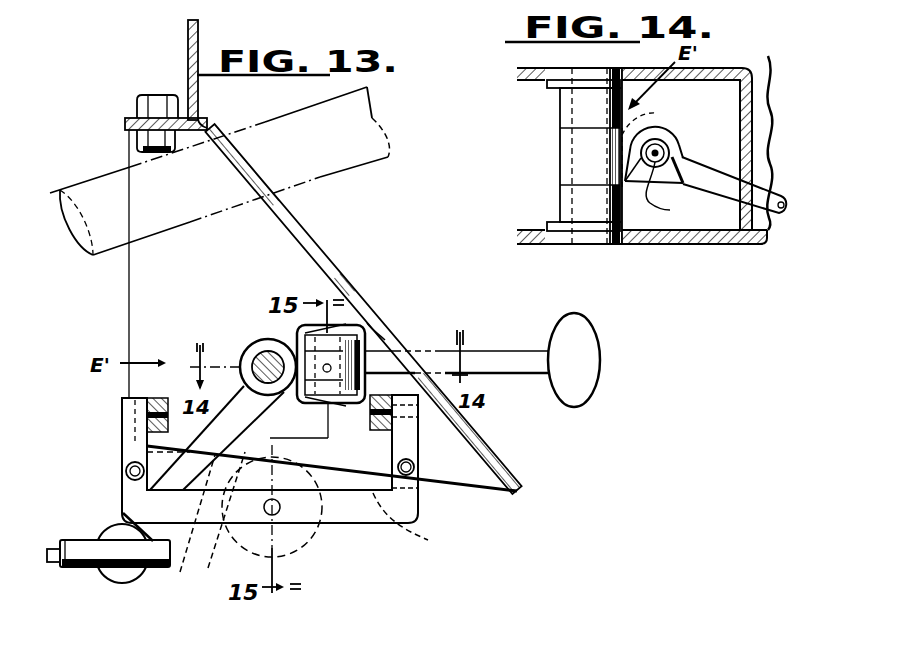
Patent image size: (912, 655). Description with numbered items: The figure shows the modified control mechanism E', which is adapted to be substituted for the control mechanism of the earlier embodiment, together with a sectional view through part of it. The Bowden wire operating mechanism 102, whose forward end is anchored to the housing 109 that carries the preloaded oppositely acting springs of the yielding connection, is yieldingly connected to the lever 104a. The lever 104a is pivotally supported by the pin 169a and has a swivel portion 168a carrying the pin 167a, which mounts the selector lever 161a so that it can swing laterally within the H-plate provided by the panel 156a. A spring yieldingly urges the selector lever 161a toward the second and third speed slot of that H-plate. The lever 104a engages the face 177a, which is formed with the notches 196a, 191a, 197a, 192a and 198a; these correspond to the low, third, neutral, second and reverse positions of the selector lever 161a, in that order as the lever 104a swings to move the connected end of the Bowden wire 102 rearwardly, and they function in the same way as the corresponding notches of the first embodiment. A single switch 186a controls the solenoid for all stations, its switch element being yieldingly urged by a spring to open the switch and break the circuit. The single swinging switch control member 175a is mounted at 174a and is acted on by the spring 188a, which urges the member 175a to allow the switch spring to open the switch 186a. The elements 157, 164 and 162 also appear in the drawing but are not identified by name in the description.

In FIG. 13, the tubular rail 157 is at (353, 170).
In FIG. 13, the panel 156a is at (484, 440).
In FIG. 14, the panel 156a is at (786, 50).
In FIG. 13, the clip 164 is at (350, 290).
In FIG. 13, the pin 169a is at (262, 352).
In FIG. 14, the pin 169a is at (575, 166).
In FIG. 13, the swivel portion 168a is at (300, 333).
In FIG. 14, the swivel portion 168a is at (668, 127).
In FIG. 13, the operating rod 162 is at (392, 333).
In FIG. 14, the operating rod 162 is at (772, 160).
In FIG. 13, the selector lever 161a is at (470, 360).
In FIG. 14, the selector lever 161a is at (713, 167).
In FIG. 13, the face 177a is at (420, 503).
In FIG. 13, the mounting 174a is at (138, 410).
In FIG. 13, the spring 188a is at (127, 471).
In FIG. 13, the switch control member 175a is at (415, 466).
In FIG. 13, the lever 104a is at (222, 420).
In FIG. 13, the pin 167a is at (330, 418).
In FIG. 14, the pin 167a is at (658, 160).
In FIG. 13, the notch 197a is at (312, 450).
In FIG. 13, the notch 192a is at (352, 458).
In FIG. 13, the switch 186a is at (300, 556).
In FIG. 13, the notch 198a is at (423, 523).
In FIG. 13, the notch 191a is at (214, 515).
In FIG. 13, the notch 196a is at (168, 555).
In FIG. 13, the Bowden wire operating mechanism 102 is at (55, 550).
In FIG. 13, the housing 109 is at (90, 573).